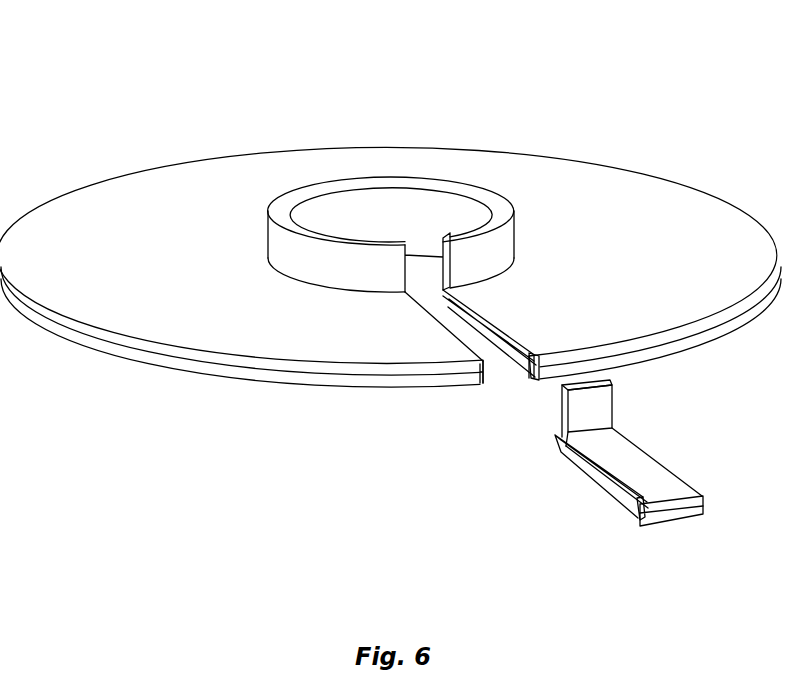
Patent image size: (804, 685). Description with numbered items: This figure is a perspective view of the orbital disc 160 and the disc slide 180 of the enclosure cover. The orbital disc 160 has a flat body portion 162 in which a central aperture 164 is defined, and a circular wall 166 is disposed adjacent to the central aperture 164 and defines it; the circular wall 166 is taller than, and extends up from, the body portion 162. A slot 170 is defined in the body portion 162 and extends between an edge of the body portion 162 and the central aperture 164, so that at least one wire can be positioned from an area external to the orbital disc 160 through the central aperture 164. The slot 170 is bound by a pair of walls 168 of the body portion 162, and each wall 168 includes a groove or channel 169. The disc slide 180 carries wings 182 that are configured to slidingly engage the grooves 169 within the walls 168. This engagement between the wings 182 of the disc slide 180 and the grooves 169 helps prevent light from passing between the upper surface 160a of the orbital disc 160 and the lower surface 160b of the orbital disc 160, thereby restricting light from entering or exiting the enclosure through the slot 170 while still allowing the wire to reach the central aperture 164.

The orbital disc 160 is at (377, 88).
The upper surface 160a is at (574, 181).
The lower surface 160b is at (208, 378).
The body portion 162 is at (658, 193).
The central aperture 164 is at (447, 213).
The circular wall 166 is at (282, 210).
The walls 168 is at (425, 306).
The groove 169 is at (484, 353).
The slot 170 is at (497, 360).
The disc slide 180 is at (700, 468).
The wings 182 is at (555, 437).